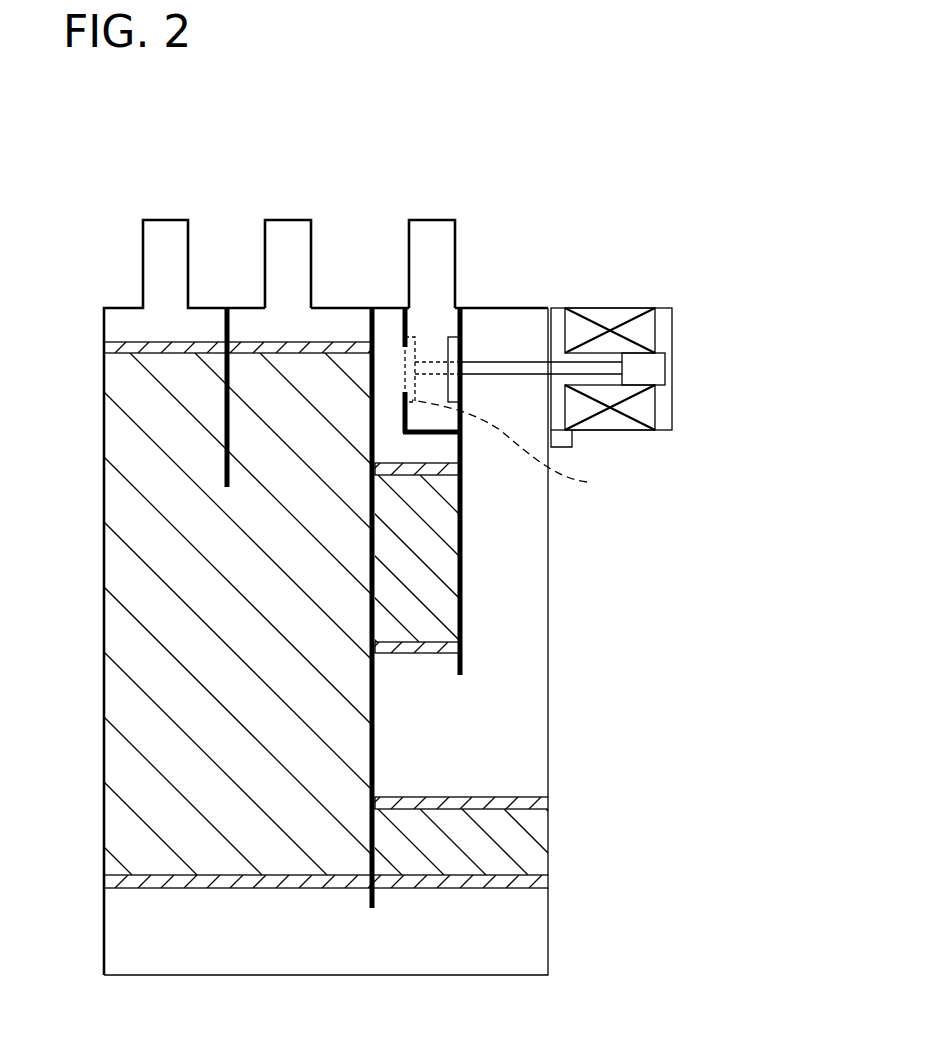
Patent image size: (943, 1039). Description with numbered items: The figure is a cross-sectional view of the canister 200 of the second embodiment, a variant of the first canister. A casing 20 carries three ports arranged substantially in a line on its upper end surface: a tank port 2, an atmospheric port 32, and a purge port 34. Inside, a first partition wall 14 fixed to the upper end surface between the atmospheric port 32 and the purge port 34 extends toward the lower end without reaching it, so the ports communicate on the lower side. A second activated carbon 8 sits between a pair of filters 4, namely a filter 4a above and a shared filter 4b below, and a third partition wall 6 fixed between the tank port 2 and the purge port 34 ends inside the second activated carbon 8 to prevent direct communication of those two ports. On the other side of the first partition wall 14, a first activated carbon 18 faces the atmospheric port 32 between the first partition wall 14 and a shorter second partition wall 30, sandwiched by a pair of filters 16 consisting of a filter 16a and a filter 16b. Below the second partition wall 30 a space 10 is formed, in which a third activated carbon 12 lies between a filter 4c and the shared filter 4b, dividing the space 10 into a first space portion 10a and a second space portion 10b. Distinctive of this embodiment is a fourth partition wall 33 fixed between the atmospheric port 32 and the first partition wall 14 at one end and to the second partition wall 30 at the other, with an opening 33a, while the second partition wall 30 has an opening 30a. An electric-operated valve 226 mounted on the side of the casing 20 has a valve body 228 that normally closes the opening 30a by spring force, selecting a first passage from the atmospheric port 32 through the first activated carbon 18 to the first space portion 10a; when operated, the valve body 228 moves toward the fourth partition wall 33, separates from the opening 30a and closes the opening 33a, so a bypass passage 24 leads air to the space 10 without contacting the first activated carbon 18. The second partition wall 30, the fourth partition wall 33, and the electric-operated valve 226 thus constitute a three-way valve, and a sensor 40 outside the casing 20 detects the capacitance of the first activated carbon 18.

The tank port 2 is at (143, 266).
The filters 4 is at (340, 631).
The filter 4a is at (105, 346).
The shared filter 4b is at (541, 882).
The filter 4c is at (541, 803).
The third partition wall 6 is at (226, 433).
The second activated carbon 8 is at (115, 508).
The space 10 is at (405, 641).
The first space portion 10a is at (538, 757).
The second space portion 10b is at (538, 935).
The third activated carbon 12 is at (538, 847).
The first partition wall 14 is at (376, 690).
The filters 16 is at (510, 580).
The filter 16a is at (463, 470).
The filter 16b is at (463, 648).
The first activated carbon 18 is at (443, 603).
The casing 20 is at (551, 591).
The bypass passage 24 is at (538, 548).
The second partition wall 30 is at (448, 336).
The opening 30a is at (462, 352).
The atmospheric port 32 is at (409, 266).
The fourth partition wall 33 is at (413, 336).
The opening 33a is at (404, 348).
The purge port 34 is at (265, 266).
The sensor 40 is at (574, 438).
The canister 200 is at (686, 239).
The electric-operated valve 226 is at (673, 333).
The valve body 228 is at (462, 387).